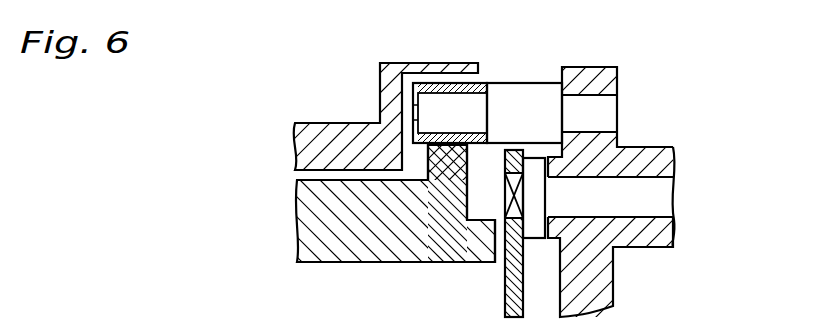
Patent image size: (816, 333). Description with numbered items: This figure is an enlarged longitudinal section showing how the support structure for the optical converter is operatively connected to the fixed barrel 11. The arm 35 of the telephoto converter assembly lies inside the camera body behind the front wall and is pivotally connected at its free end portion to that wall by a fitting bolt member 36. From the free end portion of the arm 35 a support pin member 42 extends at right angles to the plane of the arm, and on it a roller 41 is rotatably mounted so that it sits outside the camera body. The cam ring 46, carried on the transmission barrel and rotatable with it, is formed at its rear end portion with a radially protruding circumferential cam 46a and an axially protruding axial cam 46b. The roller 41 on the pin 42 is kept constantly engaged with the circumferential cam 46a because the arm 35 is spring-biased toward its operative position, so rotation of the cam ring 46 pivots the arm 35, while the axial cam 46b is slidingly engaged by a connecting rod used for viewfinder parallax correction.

The fixed barrel 11 is at (343, 127).
The roller 41 is at (472, 83).
The support pin member 42 is at (477, 115).
The cam ring 46 is at (343, 228).
The circumferential cam 46a is at (447, 155).
The axial cam 46b is at (487, 235).
The arm 35 is at (595, 272).
The fitting bolt member 36 is at (633, 193).